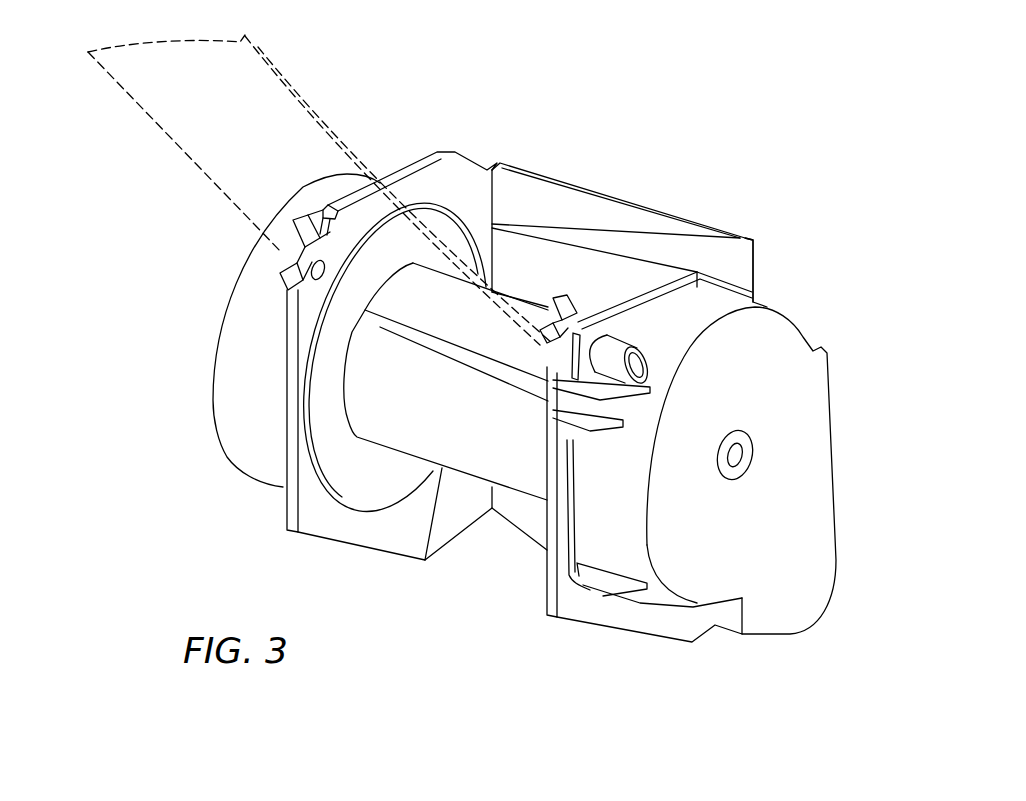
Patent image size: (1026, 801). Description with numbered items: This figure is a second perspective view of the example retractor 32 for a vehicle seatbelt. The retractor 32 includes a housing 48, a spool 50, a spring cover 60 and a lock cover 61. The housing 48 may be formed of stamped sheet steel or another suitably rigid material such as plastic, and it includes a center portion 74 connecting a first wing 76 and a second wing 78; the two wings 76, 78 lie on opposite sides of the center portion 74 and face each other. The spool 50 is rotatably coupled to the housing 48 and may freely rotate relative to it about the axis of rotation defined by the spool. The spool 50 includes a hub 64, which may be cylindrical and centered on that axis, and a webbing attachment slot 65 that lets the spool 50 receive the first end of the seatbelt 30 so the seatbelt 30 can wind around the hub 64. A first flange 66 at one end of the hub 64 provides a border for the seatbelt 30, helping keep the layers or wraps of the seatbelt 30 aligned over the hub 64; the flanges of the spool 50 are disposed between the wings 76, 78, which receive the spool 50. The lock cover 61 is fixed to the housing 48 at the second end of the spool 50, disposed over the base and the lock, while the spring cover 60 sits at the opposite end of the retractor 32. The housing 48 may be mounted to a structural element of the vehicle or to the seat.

The seatbelt 30 is at (318, 90).
The retractor 32 is at (779, 140).
The housing 48 is at (566, 177).
The spool 50 is at (353, 516).
The spring cover 60 is at (212, 386).
The lock cover 61 is at (833, 434).
The hub 64 is at (433, 490).
The webbing attachment slot 65 is at (426, 347).
The first flange 66 is at (342, 504).
The center portion 74 is at (673, 214).
The first wing 76 is at (402, 170).
The second wing 78 is at (547, 582).